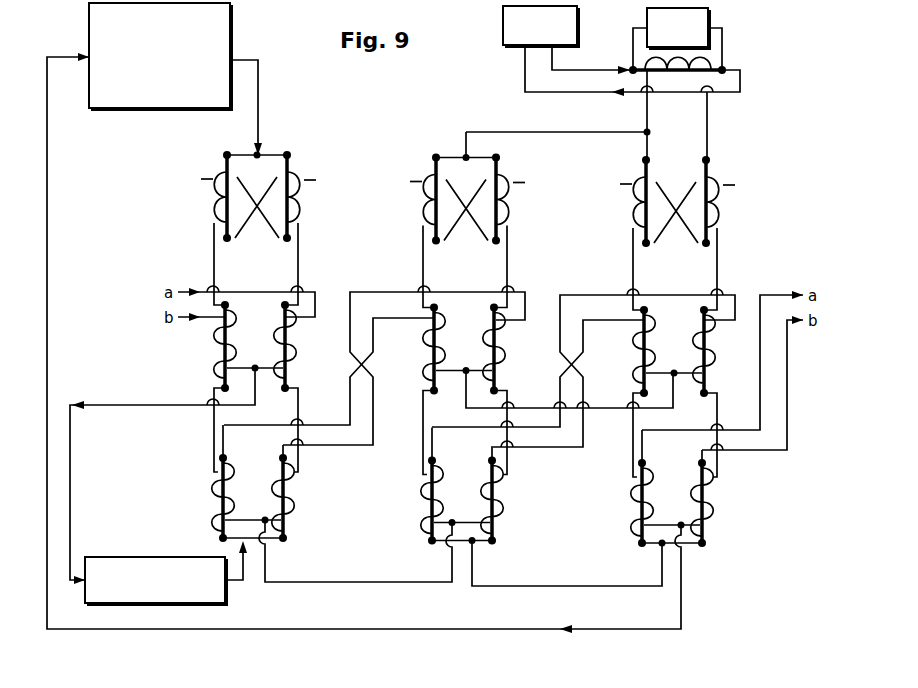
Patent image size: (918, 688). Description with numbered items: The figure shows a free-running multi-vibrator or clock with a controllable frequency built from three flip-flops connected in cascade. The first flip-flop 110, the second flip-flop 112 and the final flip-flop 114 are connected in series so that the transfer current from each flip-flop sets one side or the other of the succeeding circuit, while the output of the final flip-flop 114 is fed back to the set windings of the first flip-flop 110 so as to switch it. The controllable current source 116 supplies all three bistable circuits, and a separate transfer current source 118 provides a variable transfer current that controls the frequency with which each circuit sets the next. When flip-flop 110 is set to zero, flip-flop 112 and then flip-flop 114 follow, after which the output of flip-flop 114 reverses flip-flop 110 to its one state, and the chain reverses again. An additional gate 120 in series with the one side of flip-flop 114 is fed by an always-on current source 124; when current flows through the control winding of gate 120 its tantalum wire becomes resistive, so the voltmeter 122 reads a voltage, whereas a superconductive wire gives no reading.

The first flip-flop 110 is at (302, 143).
The second flip-flop 112 is at (429, 148).
The final flip-flop 114 is at (686, 163).
The controllable current source 116 is at (160, 56).
The transfer current source 118 is at (156, 571).
The gate 120 is at (748, 59).
The voltmeter 122 is at (678, 28).
The current source 124 is at (541, 26).